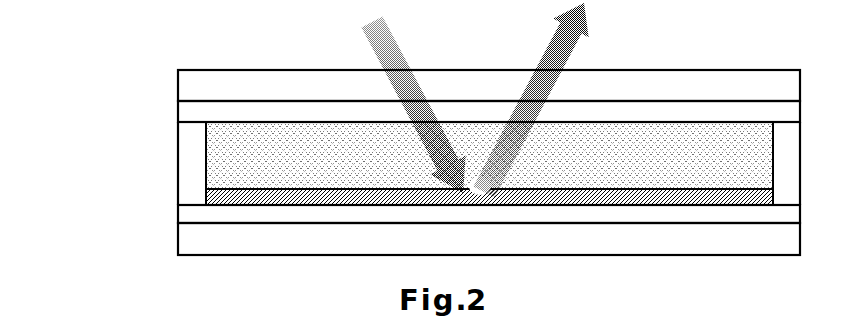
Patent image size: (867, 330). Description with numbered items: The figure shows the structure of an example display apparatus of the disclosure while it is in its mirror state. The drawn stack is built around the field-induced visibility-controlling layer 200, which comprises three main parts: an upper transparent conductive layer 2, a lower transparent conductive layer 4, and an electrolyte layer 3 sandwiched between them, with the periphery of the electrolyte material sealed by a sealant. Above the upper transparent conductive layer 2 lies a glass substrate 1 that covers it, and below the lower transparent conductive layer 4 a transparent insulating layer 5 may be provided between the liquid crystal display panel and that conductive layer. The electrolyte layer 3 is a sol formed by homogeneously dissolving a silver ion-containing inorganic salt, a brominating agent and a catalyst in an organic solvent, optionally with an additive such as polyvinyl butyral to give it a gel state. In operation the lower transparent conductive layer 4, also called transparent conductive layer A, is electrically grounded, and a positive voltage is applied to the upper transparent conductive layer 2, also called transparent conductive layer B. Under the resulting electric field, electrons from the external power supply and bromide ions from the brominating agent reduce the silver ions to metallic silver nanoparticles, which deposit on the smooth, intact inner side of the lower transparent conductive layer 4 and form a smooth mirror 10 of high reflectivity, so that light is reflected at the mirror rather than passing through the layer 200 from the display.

The glass substrate 1 is at (178, 88).
The upper transparent conductive layer 2 is at (178, 109).
The electrolyte layer 3 is at (248, 165).
The mirror 10 is at (178, 193).
The lower transparent conductive layer 4 is at (178, 217).
The transparent insulating layer 5 is at (178, 236).
The field-induced visibility-controlling layer 200 is at (80, 107).
The transparent conductive layer A is at (489, 212).
The transparent conductive layer B is at (489, 113).